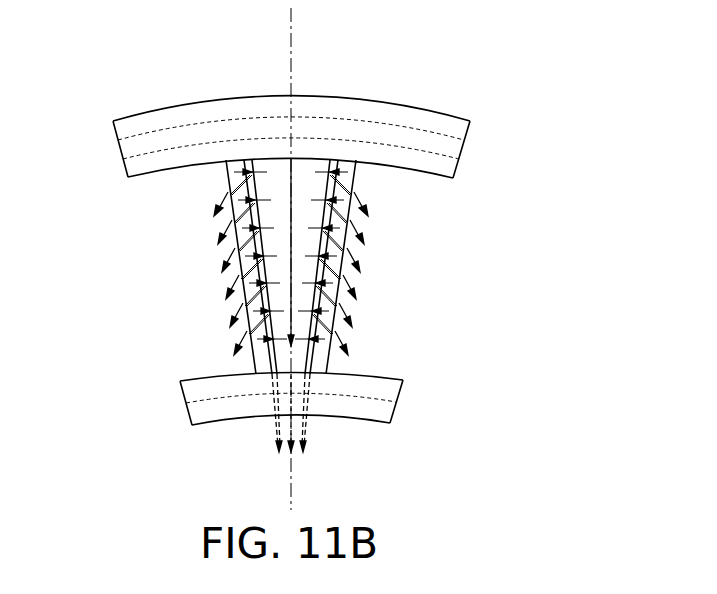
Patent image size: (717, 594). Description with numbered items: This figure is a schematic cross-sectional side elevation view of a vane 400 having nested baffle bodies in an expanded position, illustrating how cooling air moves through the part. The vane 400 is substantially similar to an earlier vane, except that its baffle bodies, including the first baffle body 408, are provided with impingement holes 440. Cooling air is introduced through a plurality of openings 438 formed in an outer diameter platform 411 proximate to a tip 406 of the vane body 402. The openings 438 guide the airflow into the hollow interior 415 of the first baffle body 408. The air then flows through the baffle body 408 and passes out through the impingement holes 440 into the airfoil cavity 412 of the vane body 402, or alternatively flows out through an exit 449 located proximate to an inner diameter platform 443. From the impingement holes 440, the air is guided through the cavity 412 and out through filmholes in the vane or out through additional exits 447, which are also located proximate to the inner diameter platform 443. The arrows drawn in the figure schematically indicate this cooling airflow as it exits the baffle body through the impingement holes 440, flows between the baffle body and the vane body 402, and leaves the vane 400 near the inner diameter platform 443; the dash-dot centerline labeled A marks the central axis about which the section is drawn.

The seal assembly 400 is at (108, 90).
The outer ring 411 is at (210, 102).
The flow passage 415 is at (280, 180).
The axis line 438 is at (291, 158).
The inlet 440 is at (332, 161).
The first seal member 406 is at (230, 172).
The second seal member 402 is at (353, 188).
The seal teeth 412 is at (333, 252).
The seal segment 408 is at (313, 362).
The flow outlet 449 is at (277, 403).
The inner ring 443 is at (207, 407).
The outlet passage 447 is at (303, 410).
The axis A is at (292, 472).